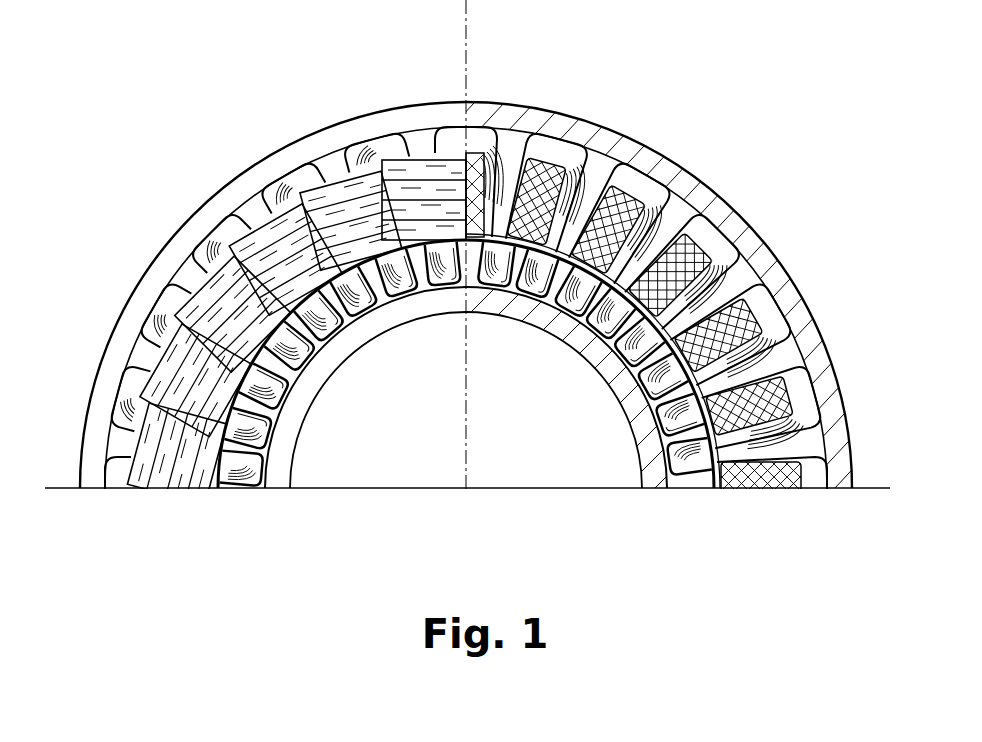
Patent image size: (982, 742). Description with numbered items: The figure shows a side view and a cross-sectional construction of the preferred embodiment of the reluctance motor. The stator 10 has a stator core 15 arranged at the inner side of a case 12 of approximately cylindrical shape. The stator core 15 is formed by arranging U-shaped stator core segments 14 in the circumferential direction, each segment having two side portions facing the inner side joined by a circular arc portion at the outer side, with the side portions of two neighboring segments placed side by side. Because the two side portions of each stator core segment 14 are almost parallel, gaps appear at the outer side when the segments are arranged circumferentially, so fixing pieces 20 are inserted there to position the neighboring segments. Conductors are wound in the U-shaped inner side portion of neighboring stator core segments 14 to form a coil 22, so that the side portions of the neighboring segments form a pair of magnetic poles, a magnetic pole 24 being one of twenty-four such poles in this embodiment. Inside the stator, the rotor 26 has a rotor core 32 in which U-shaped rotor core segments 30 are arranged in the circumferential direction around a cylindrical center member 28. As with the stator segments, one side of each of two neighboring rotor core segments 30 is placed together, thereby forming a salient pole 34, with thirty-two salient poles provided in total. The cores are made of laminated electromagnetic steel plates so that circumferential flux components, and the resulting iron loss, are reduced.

The stator 10 is at (561, 102).
The case 12 is at (626, 133).
The stator core segment 14 is at (792, 298).
The stator core 15 is at (737, 492).
The fixing piece 20 is at (828, 347).
The coil 22 is at (432, 130).
The magnetic pole 24 is at (637, 365).
The rotor 26 is at (403, 325).
The cylindrical center member 28 is at (328, 383).
The rotor core segment 30 is at (640, 415).
The rotor core 32 is at (691, 484).
The salient pole 34 is at (540, 280).